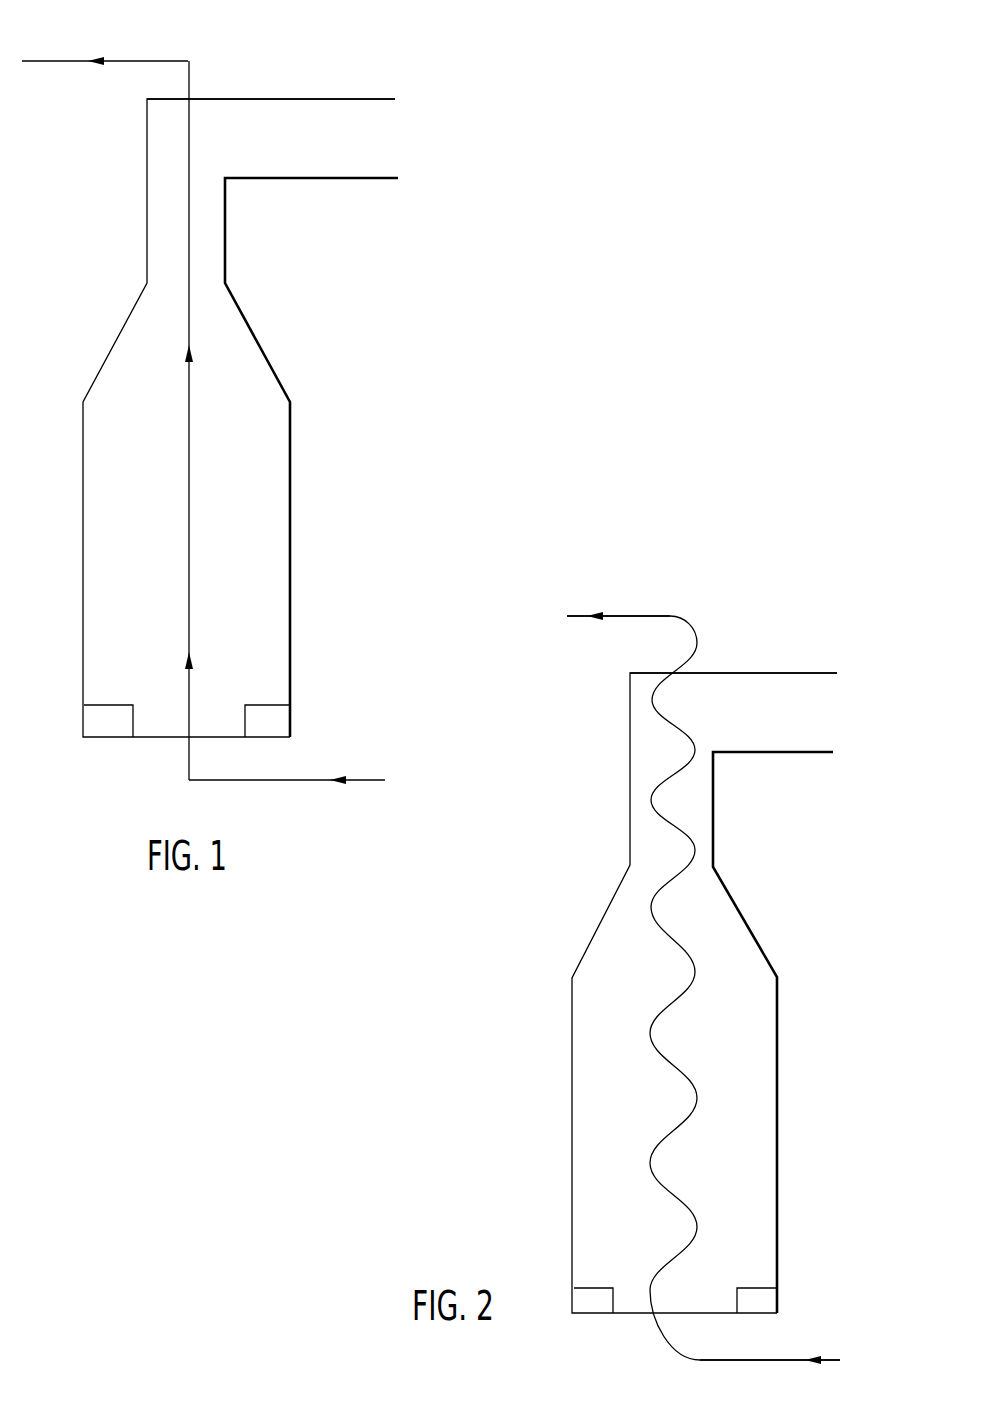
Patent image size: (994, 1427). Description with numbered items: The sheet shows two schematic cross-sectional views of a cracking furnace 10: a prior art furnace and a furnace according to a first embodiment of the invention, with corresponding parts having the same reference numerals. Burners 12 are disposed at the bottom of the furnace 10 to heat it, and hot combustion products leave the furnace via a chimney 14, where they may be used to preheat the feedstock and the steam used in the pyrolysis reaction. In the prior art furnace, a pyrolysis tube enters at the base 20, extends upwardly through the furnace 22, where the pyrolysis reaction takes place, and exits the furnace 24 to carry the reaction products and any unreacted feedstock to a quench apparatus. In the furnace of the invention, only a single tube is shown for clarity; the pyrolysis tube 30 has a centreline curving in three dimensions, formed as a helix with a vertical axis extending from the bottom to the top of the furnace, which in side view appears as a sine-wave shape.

In FIG. 1, the cracking furnace 10 is at (82, 520).
In FIG. 2, the cracking furnace 10 is at (572, 1095).
In FIG. 1, the burners 12 is at (111, 723).
In FIG. 2, the burners 12 is at (602, 1298).
In FIG. 1, the chimney 14 is at (275, 123).
In FIG. 2, the chimney 14 is at (736, 697).
In FIG. 1, the pyrolysis tube entry 20 is at (317, 770).
In FIG. 2, the pyrolysis tube entry 20 is at (777, 1350).
In FIG. 1, the pyrolysis tube upward portion 22 is at (205, 453).
In FIG. 1, the pyrolysis tube exit 24 is at (75, 58).
In FIG. 2, the pyrolysis tube exit 24 is at (642, 612).
In FIG. 2, the pyrolysis tube 30 is at (699, 1067).